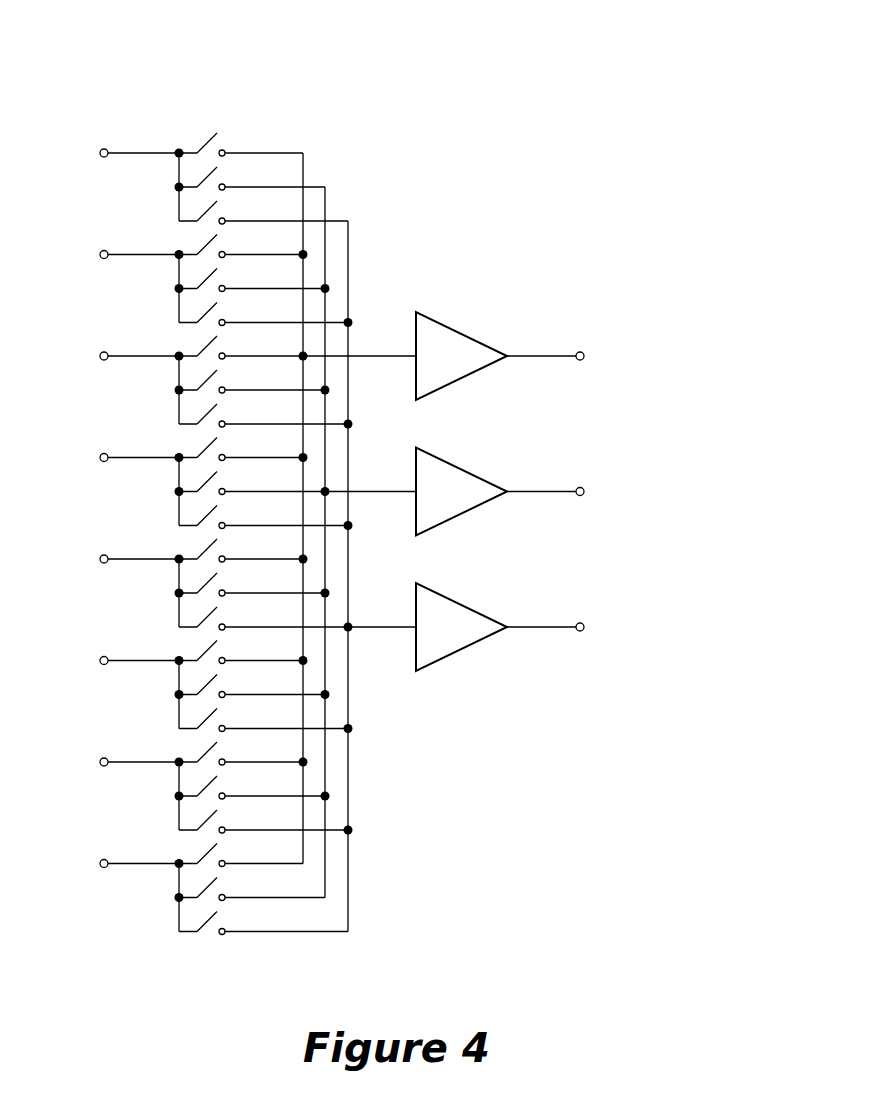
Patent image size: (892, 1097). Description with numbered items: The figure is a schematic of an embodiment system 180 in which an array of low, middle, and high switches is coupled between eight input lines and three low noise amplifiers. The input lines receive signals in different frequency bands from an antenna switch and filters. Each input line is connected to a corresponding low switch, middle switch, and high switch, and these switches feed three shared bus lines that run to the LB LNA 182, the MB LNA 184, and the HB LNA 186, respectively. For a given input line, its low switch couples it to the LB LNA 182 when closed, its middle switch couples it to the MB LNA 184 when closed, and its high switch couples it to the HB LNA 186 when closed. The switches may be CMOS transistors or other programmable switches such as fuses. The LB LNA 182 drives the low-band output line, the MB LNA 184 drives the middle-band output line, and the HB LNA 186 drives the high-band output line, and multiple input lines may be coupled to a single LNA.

The system 180 is at (614, 103).
The LB LNA 182 is at (470, 334).
The MB LNA 184 is at (470, 470).
The HB LNA 186 is at (470, 605).